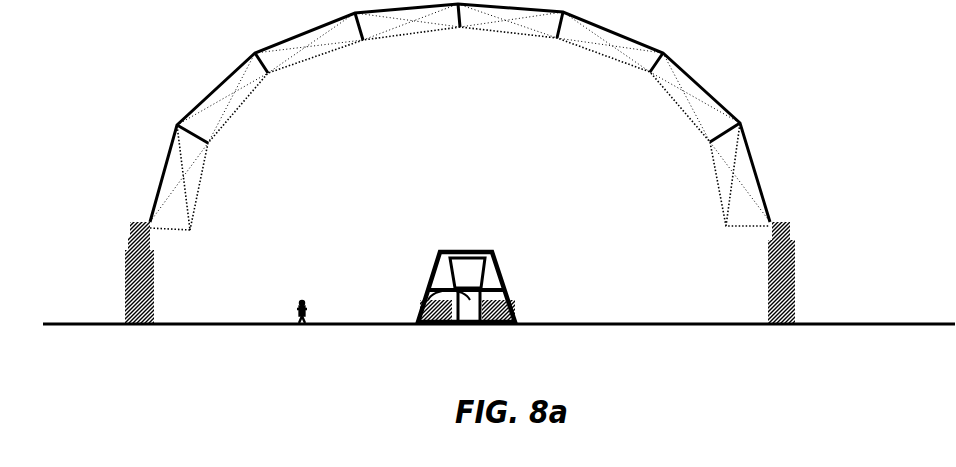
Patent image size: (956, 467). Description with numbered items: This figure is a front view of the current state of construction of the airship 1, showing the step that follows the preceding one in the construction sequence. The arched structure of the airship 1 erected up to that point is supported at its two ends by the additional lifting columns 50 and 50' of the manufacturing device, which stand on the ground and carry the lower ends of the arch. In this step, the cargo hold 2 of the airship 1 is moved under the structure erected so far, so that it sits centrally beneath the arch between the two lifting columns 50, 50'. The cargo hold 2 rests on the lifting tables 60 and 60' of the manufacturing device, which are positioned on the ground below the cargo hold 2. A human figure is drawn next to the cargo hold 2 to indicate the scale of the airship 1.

The arched truss structure 1 is at (741, 92).
The central frame structure 2 is at (489, 248).
The support pillar 50 is at (116, 249).
The support pillar 50' is at (796, 253).
The base block 60 is at (406, 299).
The base block 60' is at (521, 298).